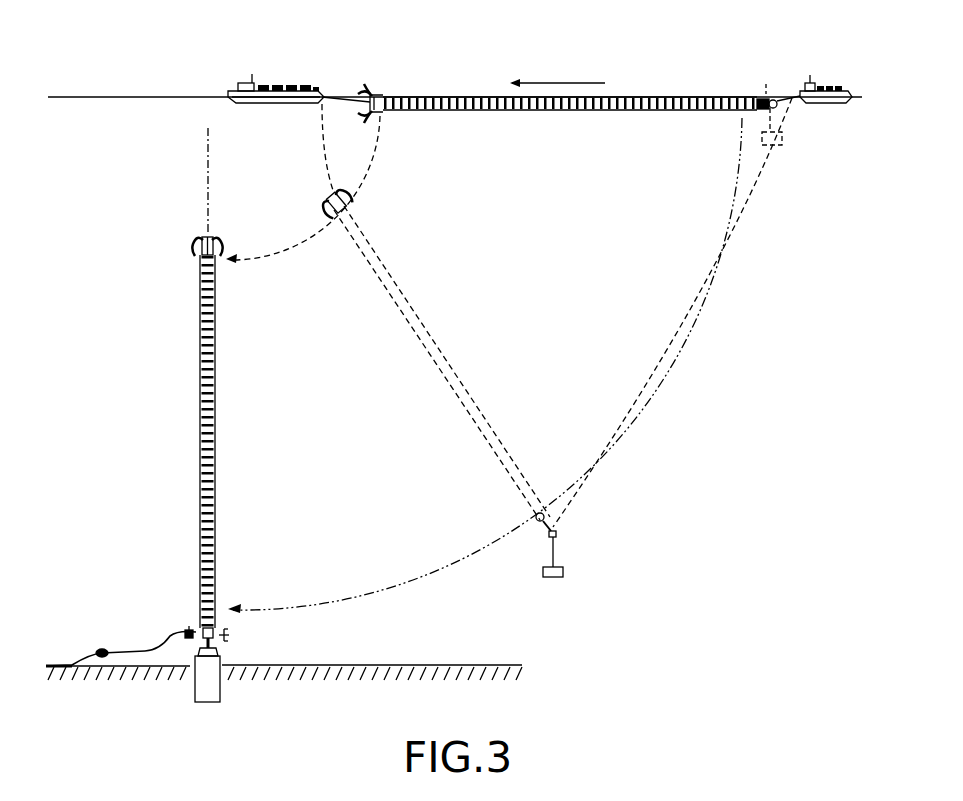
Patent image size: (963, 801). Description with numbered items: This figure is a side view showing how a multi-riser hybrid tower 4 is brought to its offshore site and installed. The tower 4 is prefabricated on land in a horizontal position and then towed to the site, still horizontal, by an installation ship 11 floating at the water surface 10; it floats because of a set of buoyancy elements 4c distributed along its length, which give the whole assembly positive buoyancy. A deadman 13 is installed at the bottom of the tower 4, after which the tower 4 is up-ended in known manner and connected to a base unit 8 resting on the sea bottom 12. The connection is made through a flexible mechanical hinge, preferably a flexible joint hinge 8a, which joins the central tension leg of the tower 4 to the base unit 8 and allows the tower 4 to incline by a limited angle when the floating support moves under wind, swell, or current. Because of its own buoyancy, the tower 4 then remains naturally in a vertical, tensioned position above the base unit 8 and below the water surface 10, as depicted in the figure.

The tower 4 is at (496, 331).
The buoyancy elements 4c is at (495, 110).
The base unit 8 is at (206, 692).
The flexible joint hinge 8a is at (216, 640).
The water surface 10 is at (92, 97).
The installation ship 11 is at (282, 80).
The sea bottom 12 is at (461, 665).
The deadman 13 is at (564, 573).